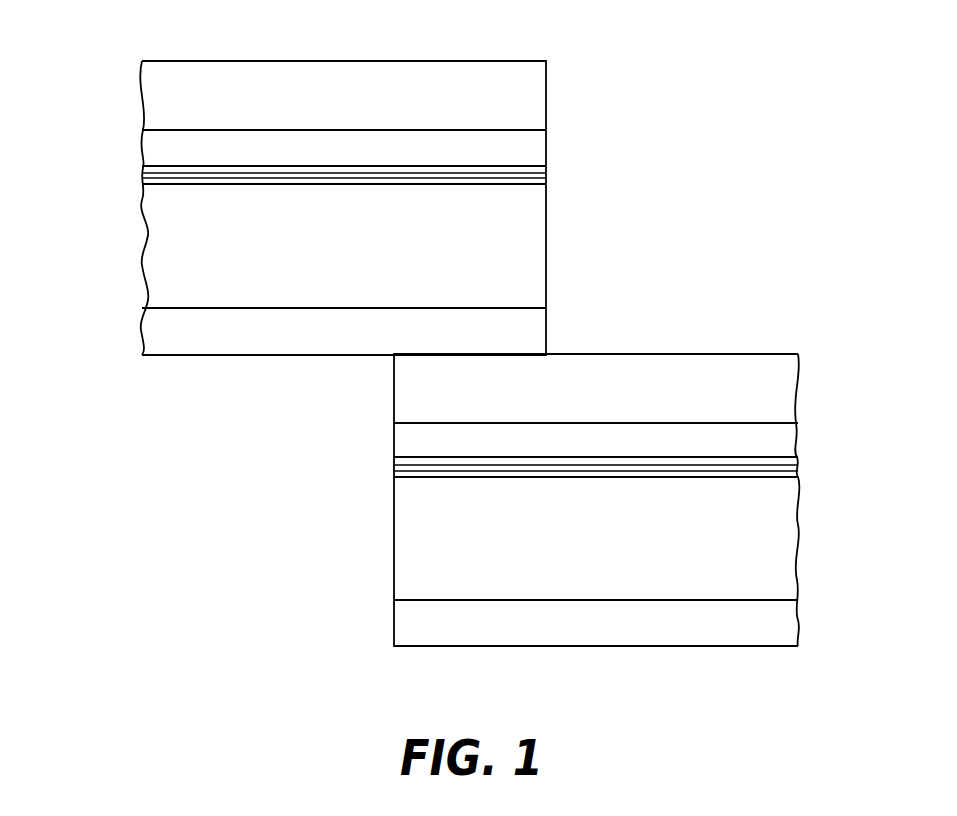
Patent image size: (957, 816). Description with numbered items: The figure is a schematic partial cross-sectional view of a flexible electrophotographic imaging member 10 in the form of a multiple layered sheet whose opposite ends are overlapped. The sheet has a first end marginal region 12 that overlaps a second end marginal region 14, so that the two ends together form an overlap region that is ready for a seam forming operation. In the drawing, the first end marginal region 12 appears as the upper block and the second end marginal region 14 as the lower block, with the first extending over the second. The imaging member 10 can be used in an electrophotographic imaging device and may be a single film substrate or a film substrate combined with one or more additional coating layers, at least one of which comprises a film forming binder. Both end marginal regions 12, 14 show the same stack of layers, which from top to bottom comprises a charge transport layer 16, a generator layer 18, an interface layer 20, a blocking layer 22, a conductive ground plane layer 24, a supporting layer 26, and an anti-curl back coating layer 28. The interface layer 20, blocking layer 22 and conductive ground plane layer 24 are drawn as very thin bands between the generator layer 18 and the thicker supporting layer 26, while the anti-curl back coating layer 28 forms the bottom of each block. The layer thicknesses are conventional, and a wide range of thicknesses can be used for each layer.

The flexible electrophotographic imaging member 10 is at (643, 114).
The first end marginal region 12 is at (464, 48).
The second end marginal region 14 is at (561, 653).
The charge transport layer 16 is at (150, 90).
The generator layer 18 is at (150, 139).
The interface layer 20 is at (143, 168).
The blocking layer 22 is at (143, 176).
The conductive ground plane layer 24 is at (143, 182).
The supporting layer 26 is at (152, 249).
The anti-curl back coating layer 28 is at (152, 325).